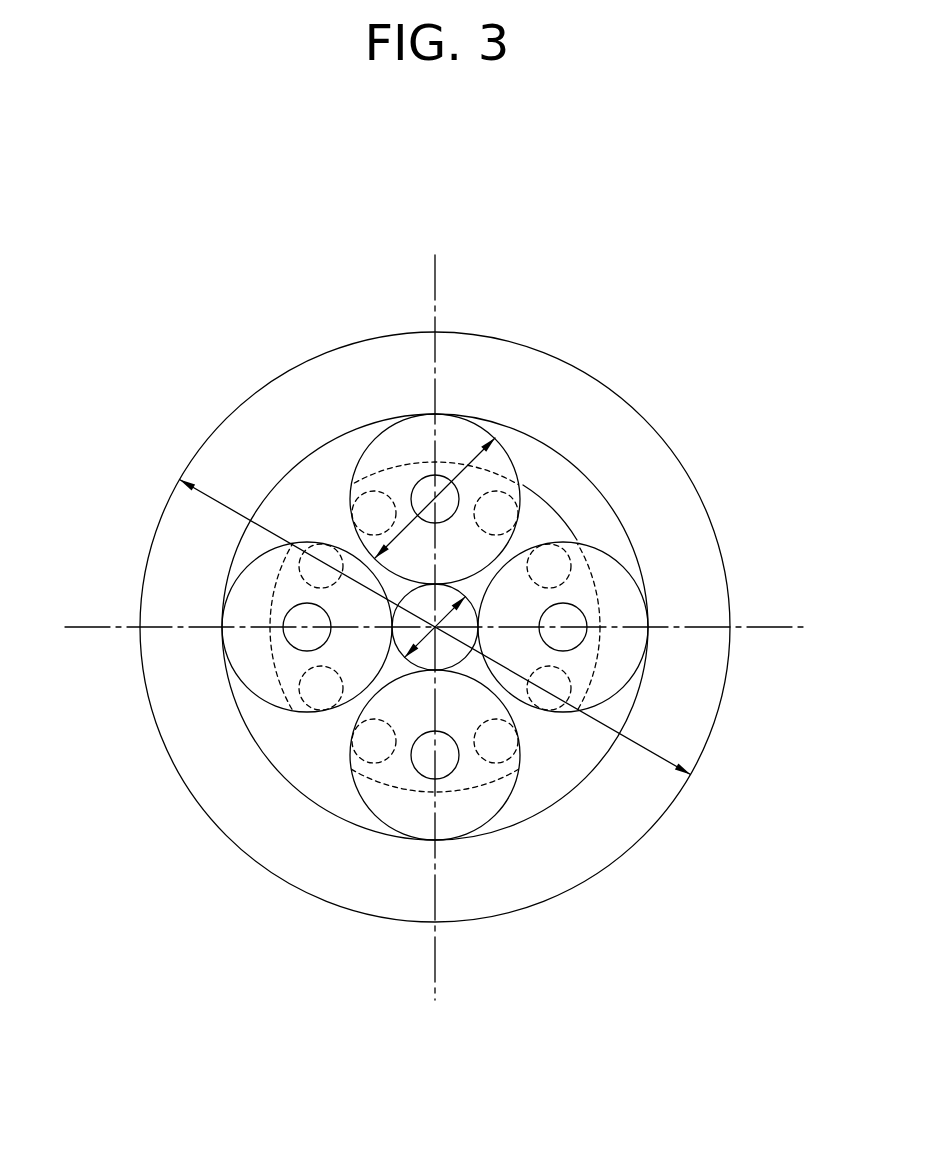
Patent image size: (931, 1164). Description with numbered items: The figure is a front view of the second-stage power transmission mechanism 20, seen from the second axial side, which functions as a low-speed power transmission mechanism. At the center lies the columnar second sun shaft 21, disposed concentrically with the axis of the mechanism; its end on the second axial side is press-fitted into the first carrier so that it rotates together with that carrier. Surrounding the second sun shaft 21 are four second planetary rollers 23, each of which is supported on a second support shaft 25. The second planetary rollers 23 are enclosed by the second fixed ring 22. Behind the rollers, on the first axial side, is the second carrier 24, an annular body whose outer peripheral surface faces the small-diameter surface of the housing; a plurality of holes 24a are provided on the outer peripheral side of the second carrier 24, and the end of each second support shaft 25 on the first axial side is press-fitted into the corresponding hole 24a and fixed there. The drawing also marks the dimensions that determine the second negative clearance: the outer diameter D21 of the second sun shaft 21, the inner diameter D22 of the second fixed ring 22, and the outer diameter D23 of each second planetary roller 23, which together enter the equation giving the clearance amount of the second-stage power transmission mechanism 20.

The second-stage power transmission mechanism 20 is at (256, 216).
The second sun shaft 21 is at (440, 667).
The second fixed ring 22 is at (607, 403).
The second planetary roller 23 is at (403, 447).
The second carrier 24 is at (328, 735).
The hole 24a is at (578, 527).
The second support shaft 25 is at (423, 492).
The outer diameter of the second sun shaft D21 is at (480, 620).
The inner diameter of the second fixed ring D22 is at (220, 500).
The outer diameter of the second planetary roller D23 is at (452, 467).